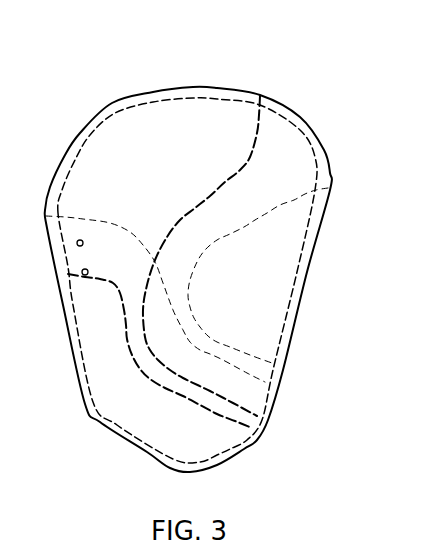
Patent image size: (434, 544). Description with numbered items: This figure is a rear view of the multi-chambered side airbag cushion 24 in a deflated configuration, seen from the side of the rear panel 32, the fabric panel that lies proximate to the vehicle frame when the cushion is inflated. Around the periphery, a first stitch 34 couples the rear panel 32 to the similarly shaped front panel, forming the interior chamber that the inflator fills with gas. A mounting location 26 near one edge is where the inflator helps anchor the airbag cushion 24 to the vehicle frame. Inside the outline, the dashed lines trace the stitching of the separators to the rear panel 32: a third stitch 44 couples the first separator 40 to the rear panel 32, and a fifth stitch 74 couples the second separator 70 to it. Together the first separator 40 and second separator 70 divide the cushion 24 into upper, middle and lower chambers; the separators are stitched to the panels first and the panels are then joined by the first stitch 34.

The side airbag cushion 24 is at (266, 66).
The mounting location 26 is at (81, 271).
The rear panel 32 is at (202, 117).
The first stitch 34 is at (120, 115).
The first separator 40 is at (289, 147).
The third stitch 44 is at (200, 204).
The second separator 70 is at (102, 233).
The fifth stitch 74 is at (150, 372).